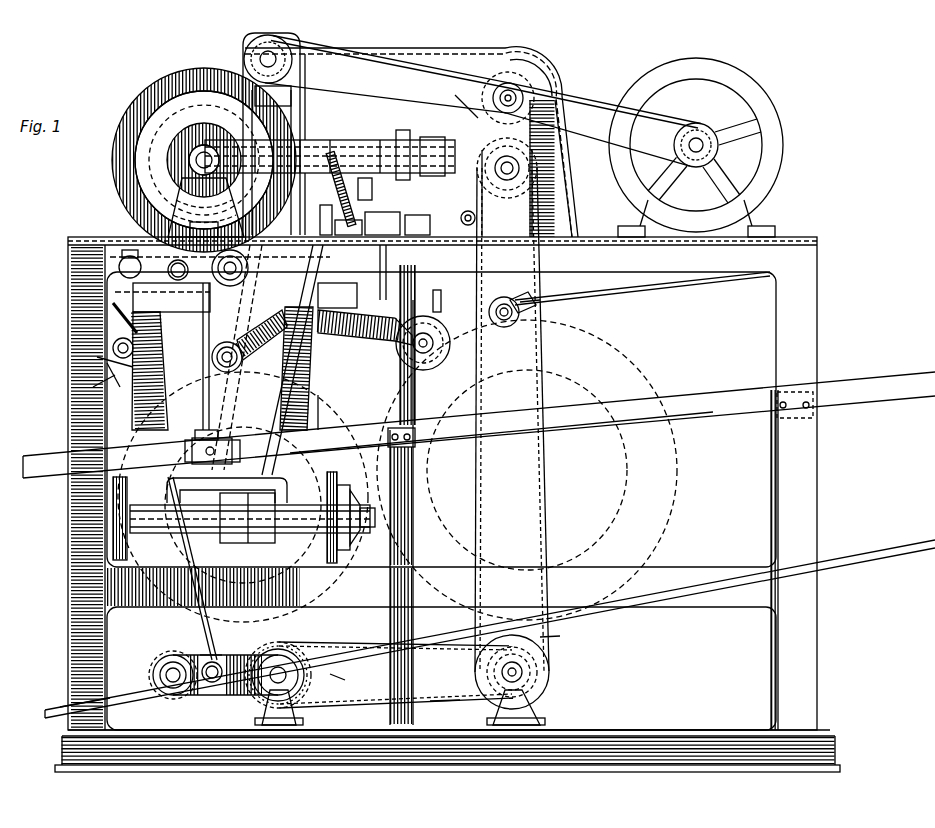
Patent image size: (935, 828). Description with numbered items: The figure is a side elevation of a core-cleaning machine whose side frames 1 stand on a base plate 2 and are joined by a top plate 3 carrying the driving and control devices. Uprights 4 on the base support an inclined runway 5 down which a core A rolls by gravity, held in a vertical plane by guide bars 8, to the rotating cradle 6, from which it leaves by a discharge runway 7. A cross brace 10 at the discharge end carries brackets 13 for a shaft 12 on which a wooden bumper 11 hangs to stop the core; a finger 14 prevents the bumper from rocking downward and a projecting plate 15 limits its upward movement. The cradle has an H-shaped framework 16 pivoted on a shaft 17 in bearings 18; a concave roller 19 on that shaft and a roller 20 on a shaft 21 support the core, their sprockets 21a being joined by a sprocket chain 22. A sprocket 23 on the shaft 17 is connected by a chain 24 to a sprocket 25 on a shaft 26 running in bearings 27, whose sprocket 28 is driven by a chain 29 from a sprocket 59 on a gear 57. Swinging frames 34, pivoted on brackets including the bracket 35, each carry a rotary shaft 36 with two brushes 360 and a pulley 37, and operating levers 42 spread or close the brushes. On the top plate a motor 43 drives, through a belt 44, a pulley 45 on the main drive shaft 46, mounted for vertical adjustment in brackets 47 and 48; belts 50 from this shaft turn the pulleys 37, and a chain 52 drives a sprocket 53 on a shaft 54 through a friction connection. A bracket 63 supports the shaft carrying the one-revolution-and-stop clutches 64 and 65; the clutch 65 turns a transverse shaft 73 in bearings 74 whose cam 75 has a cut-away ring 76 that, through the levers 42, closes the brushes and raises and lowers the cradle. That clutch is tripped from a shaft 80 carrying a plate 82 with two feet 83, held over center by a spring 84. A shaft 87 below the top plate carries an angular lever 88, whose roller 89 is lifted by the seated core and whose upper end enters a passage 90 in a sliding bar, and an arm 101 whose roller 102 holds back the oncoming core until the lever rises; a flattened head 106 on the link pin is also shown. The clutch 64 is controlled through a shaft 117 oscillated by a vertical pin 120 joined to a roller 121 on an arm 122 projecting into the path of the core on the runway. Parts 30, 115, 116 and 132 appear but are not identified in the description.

The side frames 1 is at (817, 470).
The base plate 2 is at (836, 738).
The top plate 3 is at (812, 237).
The vertical brackets or uprights 4 is at (412, 510).
The inclined runway 5 is at (890, 548).
The core supporting and rotating cradle 6 is at (205, 655).
The inclined discharge runway 7 is at (105, 706).
The parallel guide bars 8 is at (858, 400).
The cross brace 10 is at (63, 349).
The bumper 11 is at (117, 376).
The shaft 12 is at (160, 345).
The brackets 13 is at (100, 330).
The finger 14 is at (93, 387).
The projecting plate 15 is at (110, 308).
The H-shaped framework 16 is at (262, 690).
The shaft 17 is at (312, 672).
The bearings 18 is at (318, 706).
The concave roller 19 is at (268, 645).
The roller 20 is at (155, 660).
The shaft 21 is at (175, 695).
The sprockets 21a is at (150, 672).
The sprocket chain 22 is at (210, 684).
The sprocket 23 is at (345, 680).
The chain 24 is at (443, 700).
The sprocket 25 is at (535, 660).
The shaft 26 is at (524, 672).
The bearings 27 is at (540, 712).
The sprocket 28 is at (560, 637).
The chain 29 is at (548, 304).
The lever rod 30 is at (192, 555).
The swinging arms or frames 34 is at (320, 395).
The bracket 35 is at (350, 285).
The rotary shaft 36 is at (212, 515).
The pulley 37 is at (340, 545).
The operating lever 42 is at (207, 373).
The motor 43 is at (772, 122).
The belt 44 is at (597, 103).
The pulley 45 is at (340, 49).
The main drive shaft 46 is at (244, 57).
The bracket 47 is at (300, 70).
The bracket 48 is at (267, 360).
The belts 50 is at (318, 355).
The chain 52 is at (450, 48).
The sprocket 53 is at (532, 62).
The shaft 54 is at (522, 88).
The gear 57 is at (560, 195).
The sprocket 59 is at (507, 187).
The bracket 63 is at (570, 215).
The one-revolution-and-stop clutch 64 is at (455, 103).
The one-revolution-and-stop clutch 65 is at (350, 140).
The transverse shaft 73 is at (192, 170).
The bearings 74 is at (180, 215).
The cam 75 is at (182, 188).
The raised flange or ring 76 is at (177, 160).
The shaft 80 is at (382, 235).
The plate 82 is at (368, 189).
The feet 83 is at (348, 235).
The spring 84 is at (340, 165).
The shaft 87 is at (287, 368).
The angular lever 88 is at (275, 312).
The roller 89 is at (228, 342).
The recess or passage 90 is at (320, 211).
The arm 101 is at (380, 335).
The roller 102 is at (420, 306).
The flattened head 106 is at (417, 235).
The disk 115 is at (403, 130).
The disk 116 is at (429, 148).
The shaft 117 is at (438, 300).
The vertical pin 120 is at (500, 272).
The roller 121 is at (505, 328).
The arm 122 is at (672, 282).
The pin 132 is at (466, 226).
The brushes 360 is at (125, 550).
The core A is at (330, 420).